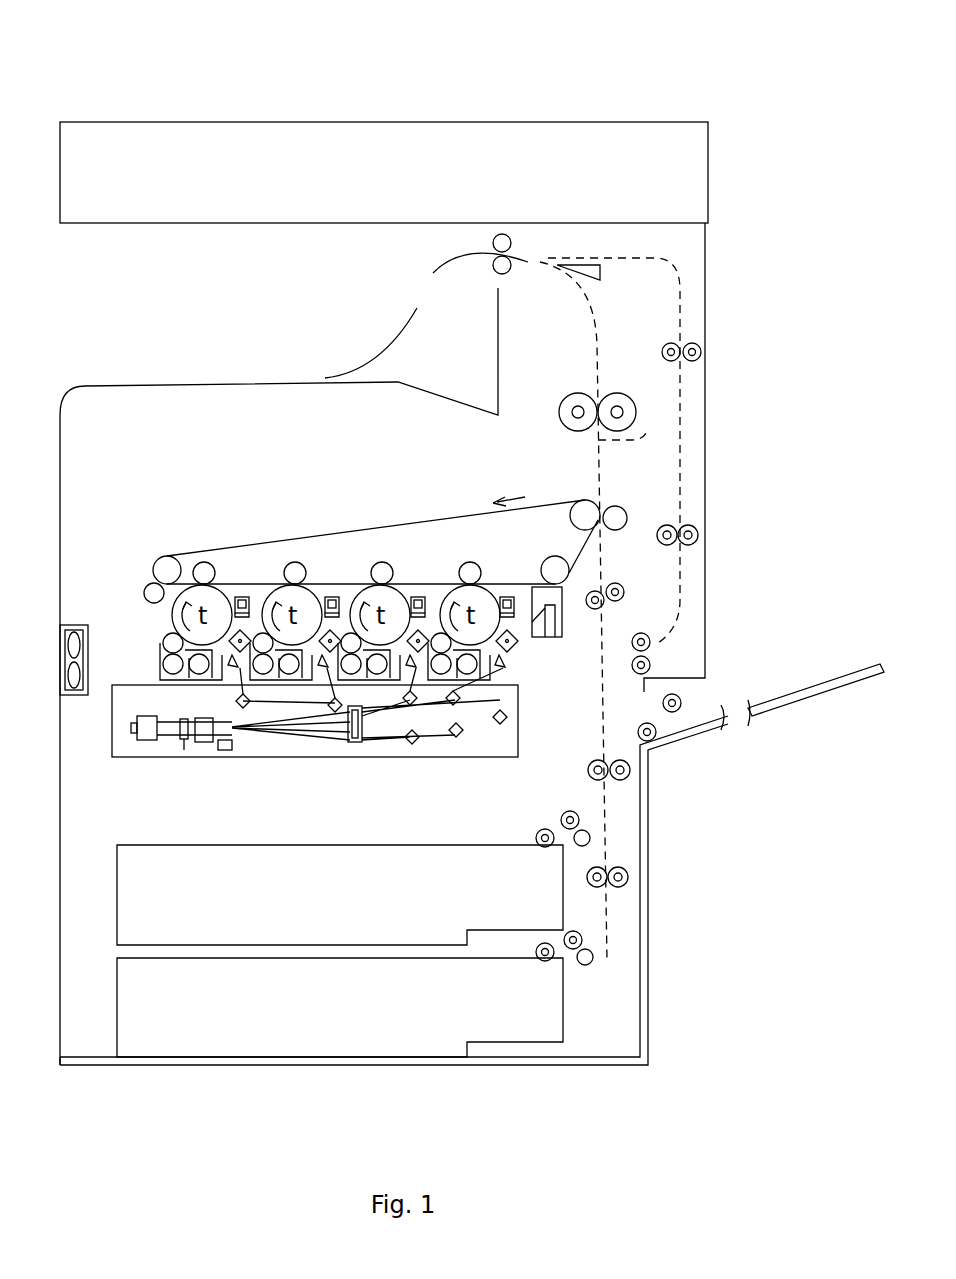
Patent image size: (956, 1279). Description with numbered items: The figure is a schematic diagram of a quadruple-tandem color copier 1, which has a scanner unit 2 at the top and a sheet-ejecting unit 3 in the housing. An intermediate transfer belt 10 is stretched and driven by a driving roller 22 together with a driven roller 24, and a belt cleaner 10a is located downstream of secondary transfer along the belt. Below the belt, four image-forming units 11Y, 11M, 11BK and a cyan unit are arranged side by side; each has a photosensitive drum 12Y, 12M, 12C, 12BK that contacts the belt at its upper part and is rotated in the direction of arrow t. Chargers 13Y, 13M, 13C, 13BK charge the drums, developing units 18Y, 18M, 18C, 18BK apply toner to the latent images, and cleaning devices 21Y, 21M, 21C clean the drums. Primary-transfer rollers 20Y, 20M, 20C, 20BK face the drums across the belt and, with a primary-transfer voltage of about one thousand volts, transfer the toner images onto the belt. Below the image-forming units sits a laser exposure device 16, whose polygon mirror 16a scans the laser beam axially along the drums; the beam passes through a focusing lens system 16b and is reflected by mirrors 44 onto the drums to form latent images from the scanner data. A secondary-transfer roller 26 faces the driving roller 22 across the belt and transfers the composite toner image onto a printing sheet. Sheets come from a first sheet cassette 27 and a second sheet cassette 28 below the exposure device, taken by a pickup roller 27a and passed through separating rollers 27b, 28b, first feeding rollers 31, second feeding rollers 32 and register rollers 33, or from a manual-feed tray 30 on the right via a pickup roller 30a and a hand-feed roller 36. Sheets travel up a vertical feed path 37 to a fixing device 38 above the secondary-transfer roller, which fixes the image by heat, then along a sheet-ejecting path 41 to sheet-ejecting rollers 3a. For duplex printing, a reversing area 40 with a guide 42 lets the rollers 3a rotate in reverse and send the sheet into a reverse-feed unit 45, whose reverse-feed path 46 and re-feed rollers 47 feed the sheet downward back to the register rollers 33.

The color copier 1 is at (703, 94).
The scanner unit 2 is at (70, 178).
The sheet-ejecting unit 3 is at (77, 323).
The sheet-ejecting rollers 3a is at (493, 244).
The intermediate transfer belt 10 is at (338, 516).
The belt cleaner 10a is at (143, 593).
The image-forming unit 11Y is at (261, 581).
The image-forming unit 11M is at (297, 650).
The image-forming unit 11BK is at (516, 635).
The photosensitive drum 12Y is at (195, 598).
The photosensitive drum 12M is at (298, 600).
The photosensitive drum 12C is at (390, 600).
The photosensitive drum 12BK is at (478, 598).
The charger 13Y is at (238, 655).
The charger 13M is at (328, 655).
The charger 13C is at (418, 655).
The charger 13BK is at (518, 642).
The laser exposure device 16 is at (168, 764).
The polygon mirror 16a is at (140, 740).
The focusing lens system 16b is at (212, 742).
The developing unit 18Y is at (160, 660).
The developing unit 18M is at (265, 680).
The developing unit 18C is at (370, 680).
The developing unit 18BK is at (455, 682).
The primary-transfer roller 20Y is at (203, 562).
The primary-transfer roller 20M is at (294, 562).
The primary-transfer roller 20C is at (381, 563).
The primary-transfer roller 20BK is at (473, 562).
The cleaning device 21Y is at (241, 596).
The cleaning device 21M is at (336, 596).
The cleaning device 21C is at (420, 596).
The driving roller 22 is at (585, 510).
The driven roller 24 is at (152, 570).
The secondary-transfer roller 26 is at (613, 513).
The first sheet cassette 27 is at (117, 912).
The pickup roller 27a is at (535, 838).
The separating roller 27b is at (595, 838).
The second sheet cassette 28 is at (117, 1008).
The separating roller 28b is at (584, 965).
The manual-feed tray 30 is at (830, 705).
The pickup roller 30a is at (683, 703).
The first feeding rollers 31 is at (630, 877).
The second feeding rollers 32 is at (632, 771).
The register rollers 33 is at (613, 585).
The hand-feed roller 36 is at (680, 734).
The vertical feed path 37 is at (634, 435).
The fixing device 38 is at (620, 405).
The reversing area 40 is at (557, 243).
The sheet-ejecting path 41 is at (595, 338).
The guide 42 is at (600, 280).
The mirrors 44 is at (323, 740).
The reverse-feed unit 45 is at (697, 260).
The reverse-feed path 46 is at (683, 455).
The re-feed rollers 47 is at (703, 352).